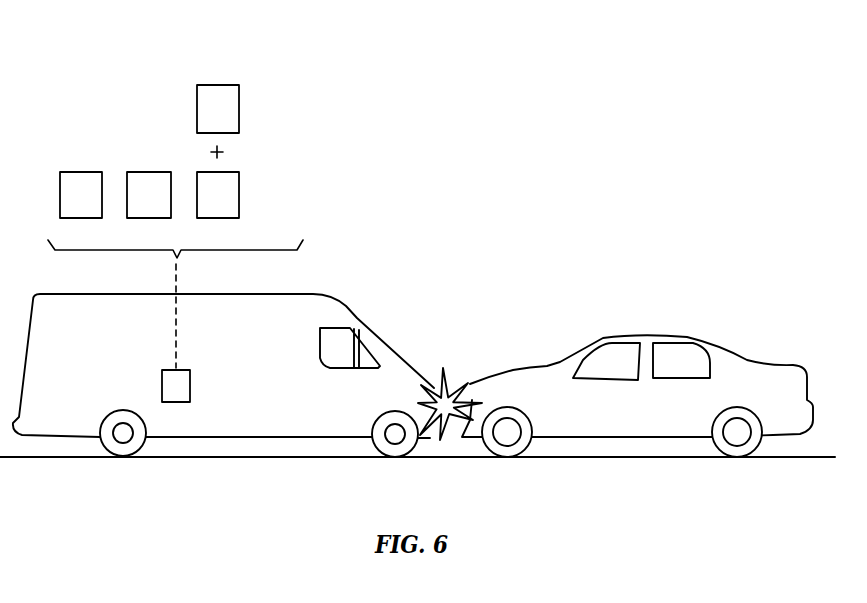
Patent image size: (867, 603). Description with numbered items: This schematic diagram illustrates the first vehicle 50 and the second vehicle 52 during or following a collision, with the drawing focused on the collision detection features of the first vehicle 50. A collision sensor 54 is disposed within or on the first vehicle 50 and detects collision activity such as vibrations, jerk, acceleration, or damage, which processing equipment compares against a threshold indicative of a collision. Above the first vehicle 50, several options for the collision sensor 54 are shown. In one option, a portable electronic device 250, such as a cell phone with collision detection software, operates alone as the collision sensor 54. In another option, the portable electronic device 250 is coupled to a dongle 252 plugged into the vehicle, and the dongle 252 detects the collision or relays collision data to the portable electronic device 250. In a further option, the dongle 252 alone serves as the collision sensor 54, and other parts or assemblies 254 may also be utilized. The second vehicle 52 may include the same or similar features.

The first vehicle 50 is at (250, 293).
The second vehicle 52 is at (650, 335).
The collision sensor 54 is at (194, 385).
The portable electronic device 250 is at (217, 78).
The dongle 252 is at (150, 159).
The other parts/assemblies 254 is at (275, 193).